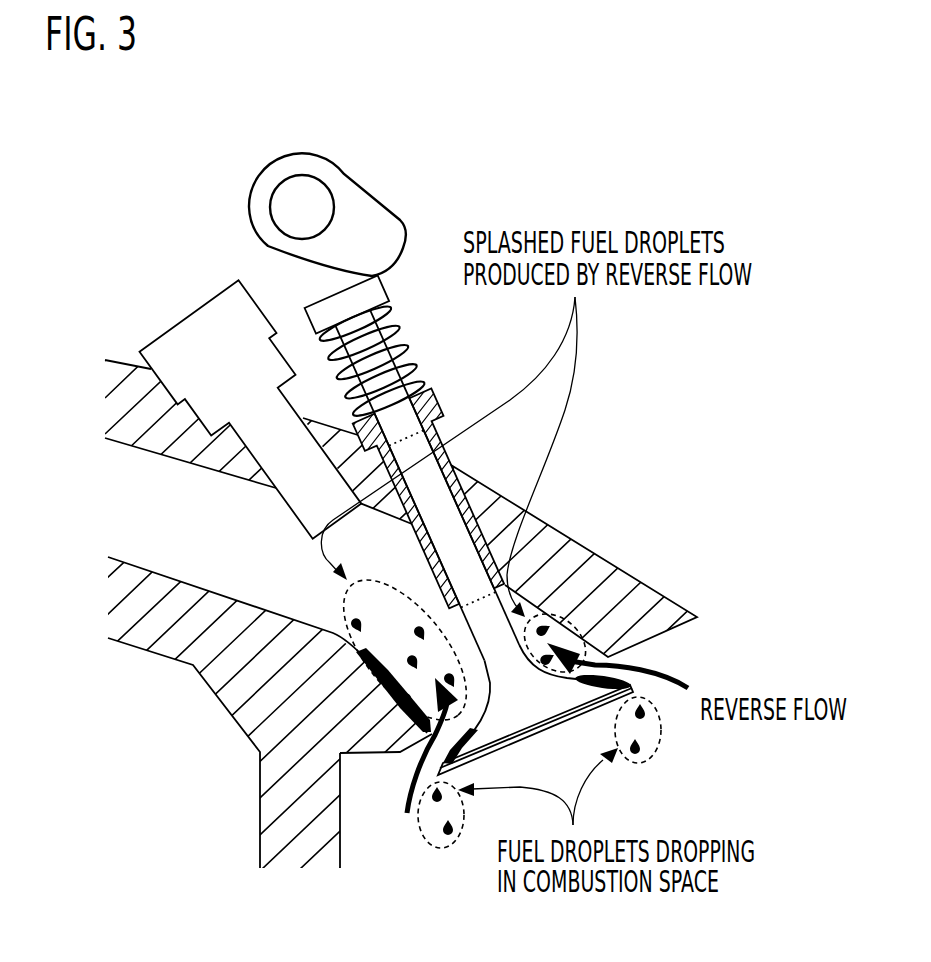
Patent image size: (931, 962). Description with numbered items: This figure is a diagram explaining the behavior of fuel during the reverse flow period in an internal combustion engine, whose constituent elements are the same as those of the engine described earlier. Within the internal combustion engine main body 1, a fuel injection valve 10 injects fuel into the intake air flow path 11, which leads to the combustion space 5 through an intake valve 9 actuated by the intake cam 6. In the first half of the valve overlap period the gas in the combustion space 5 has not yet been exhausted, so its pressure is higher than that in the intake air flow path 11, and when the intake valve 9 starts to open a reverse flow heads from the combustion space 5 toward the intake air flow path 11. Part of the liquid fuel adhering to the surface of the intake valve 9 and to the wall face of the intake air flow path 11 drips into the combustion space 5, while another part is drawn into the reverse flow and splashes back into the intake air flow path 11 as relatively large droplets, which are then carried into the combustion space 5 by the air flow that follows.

The internal combustion engine main body 1 is at (290, 764).
The combustion space 5 is at (368, 808).
The intake cam 6 is at (373, 233).
The intake valve 9 is at (527, 700).
The fuel injection valve 10 is at (213, 330).
The intake air flow path 11 is at (218, 532).